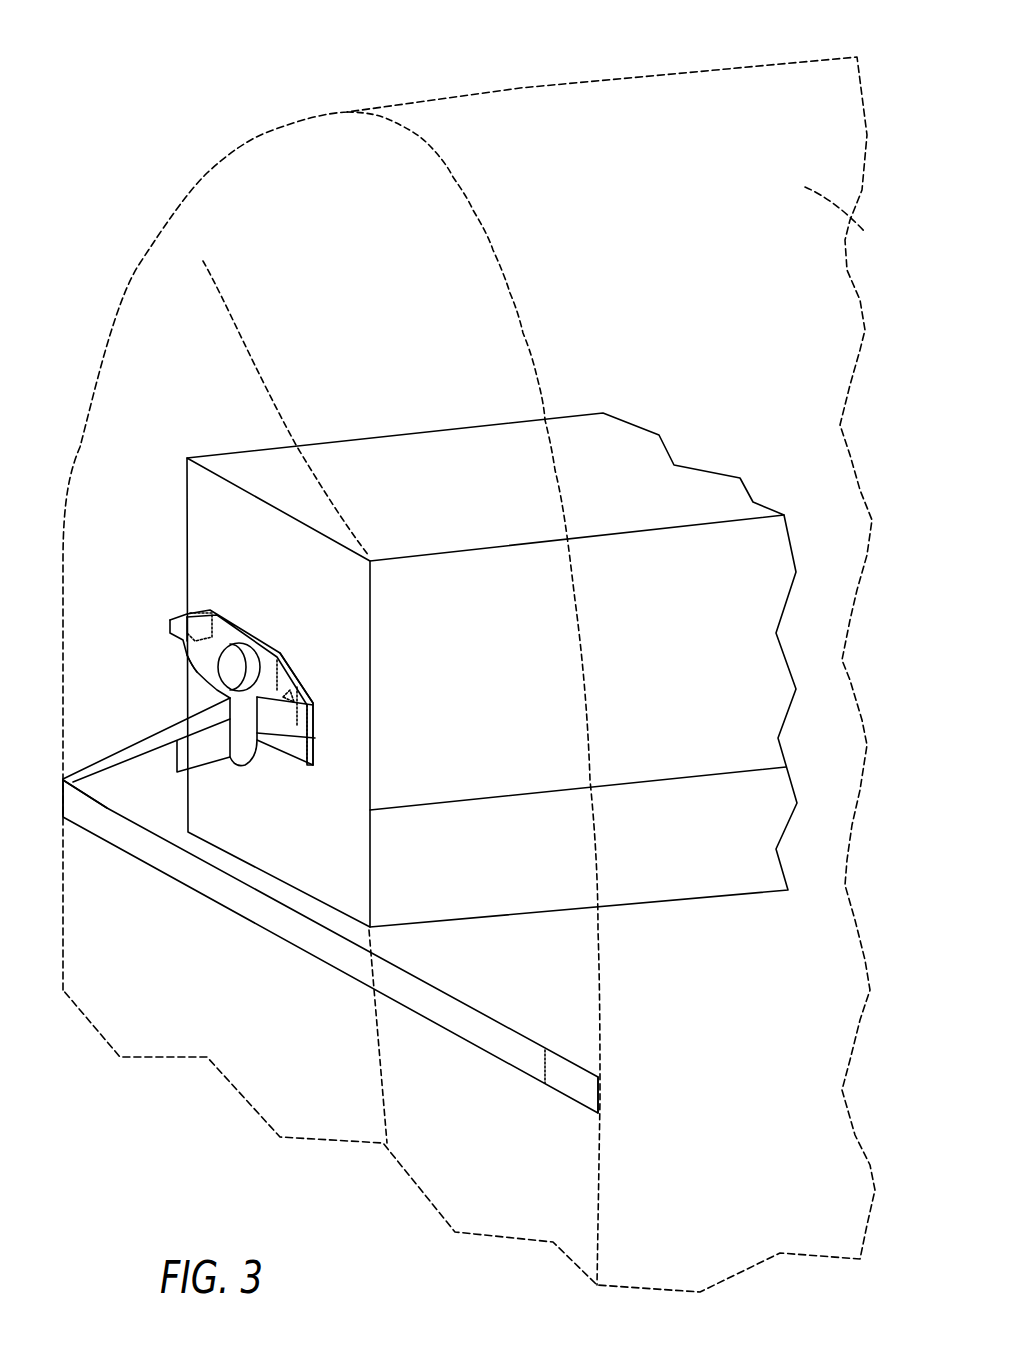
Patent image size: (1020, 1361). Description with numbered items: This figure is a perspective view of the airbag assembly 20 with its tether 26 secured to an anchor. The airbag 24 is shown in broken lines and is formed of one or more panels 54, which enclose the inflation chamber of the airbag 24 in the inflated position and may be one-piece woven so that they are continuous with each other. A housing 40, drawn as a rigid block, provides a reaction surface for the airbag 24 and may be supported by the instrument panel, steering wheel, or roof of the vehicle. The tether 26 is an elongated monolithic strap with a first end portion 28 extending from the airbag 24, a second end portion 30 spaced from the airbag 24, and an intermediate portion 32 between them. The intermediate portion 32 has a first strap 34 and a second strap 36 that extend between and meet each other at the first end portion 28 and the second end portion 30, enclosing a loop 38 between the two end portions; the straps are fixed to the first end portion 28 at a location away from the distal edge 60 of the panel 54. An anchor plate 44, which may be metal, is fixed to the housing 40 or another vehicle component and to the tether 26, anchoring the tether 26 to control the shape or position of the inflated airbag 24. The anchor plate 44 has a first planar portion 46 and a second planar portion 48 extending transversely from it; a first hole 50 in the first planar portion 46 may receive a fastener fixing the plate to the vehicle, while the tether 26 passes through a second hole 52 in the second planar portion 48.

The airbag assembly 20 is at (126, 518).
The airbag 24 is at (487, 674).
The tether 26 is at (308, 950).
The first end portion 28 is at (570, 1085).
The second end portion 30 is at (205, 763).
The intermediate portion 32 is at (103, 782).
The first strap 34 is at (140, 783).
The second strap 36 is at (147, 738).
The loop 38 is at (258, 740).
The housing 40 is at (440, 448).
The anchor plate 44 is at (222, 612).
The first planar portion 46 is at (195, 669).
The second planar portion 48 is at (300, 672).
The first hole 50 is at (254, 658).
The second hole 52 is at (292, 700).
The panels 54 is at (244, 195).
The distal edge 60 is at (601, 1093).